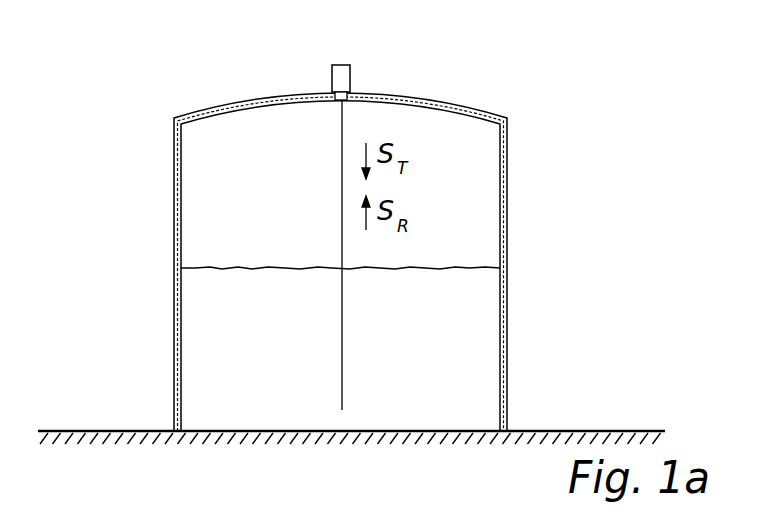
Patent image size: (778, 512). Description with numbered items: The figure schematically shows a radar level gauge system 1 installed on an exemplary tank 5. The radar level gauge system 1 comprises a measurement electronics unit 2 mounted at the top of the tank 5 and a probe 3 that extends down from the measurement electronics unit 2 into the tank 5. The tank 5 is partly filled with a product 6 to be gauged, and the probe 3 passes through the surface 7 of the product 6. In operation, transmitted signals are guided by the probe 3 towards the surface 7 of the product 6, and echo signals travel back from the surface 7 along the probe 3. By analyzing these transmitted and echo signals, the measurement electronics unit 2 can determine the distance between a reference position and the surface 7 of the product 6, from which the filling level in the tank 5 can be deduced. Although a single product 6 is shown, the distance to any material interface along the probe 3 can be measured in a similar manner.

The radar level gauge system 1 is at (342, 209).
The measurement electronics unit 2 is at (331, 74).
The probe 3 is at (342, 132).
The tank 5 is at (507, 151).
The product 6 is at (372, 269).
The surface 7 is at (486, 268).